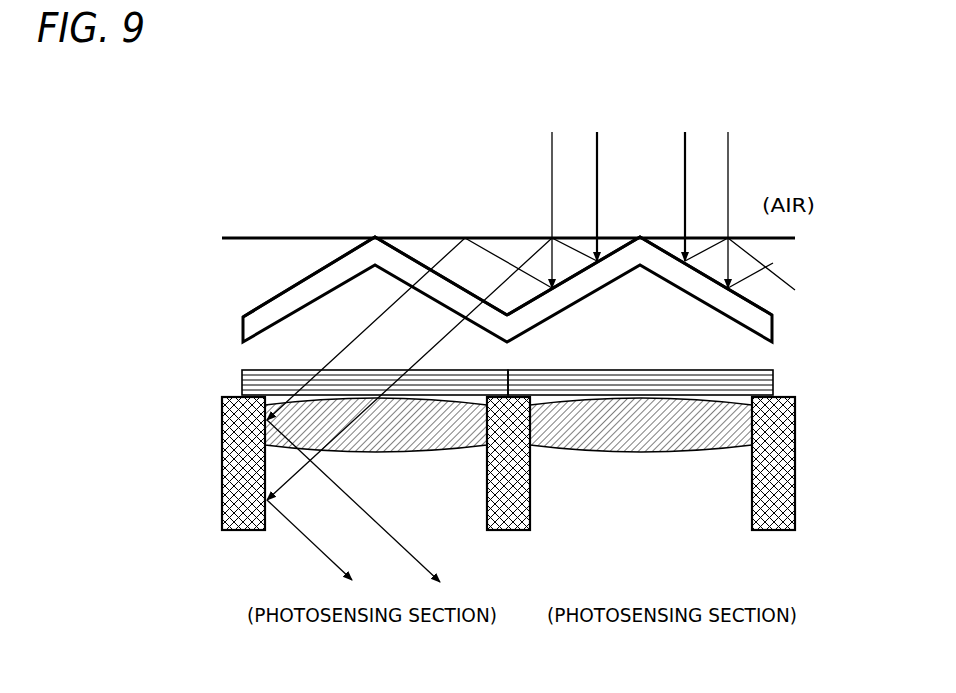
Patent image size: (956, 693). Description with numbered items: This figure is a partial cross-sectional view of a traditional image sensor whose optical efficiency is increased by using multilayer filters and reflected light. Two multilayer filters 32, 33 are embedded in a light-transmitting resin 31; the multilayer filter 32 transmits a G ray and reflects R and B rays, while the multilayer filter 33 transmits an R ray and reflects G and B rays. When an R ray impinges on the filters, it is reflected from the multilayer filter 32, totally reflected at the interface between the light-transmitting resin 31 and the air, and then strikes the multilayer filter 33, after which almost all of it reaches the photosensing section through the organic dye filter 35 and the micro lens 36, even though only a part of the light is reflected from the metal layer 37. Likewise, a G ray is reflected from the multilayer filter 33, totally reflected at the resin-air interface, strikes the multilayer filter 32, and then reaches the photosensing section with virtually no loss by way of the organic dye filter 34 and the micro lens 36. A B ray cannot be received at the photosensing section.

The light-transmitting resin 31 is at (287, 265).
The multilayer filter 32 is at (398, 265).
The multilayer filter 33 is at (530, 317).
The organic dye filter 34 is at (242, 370).
The organic dye filter 35 is at (773, 370).
The micro lens 36 is at (420, 422).
The metal layer 37 is at (230, 457).